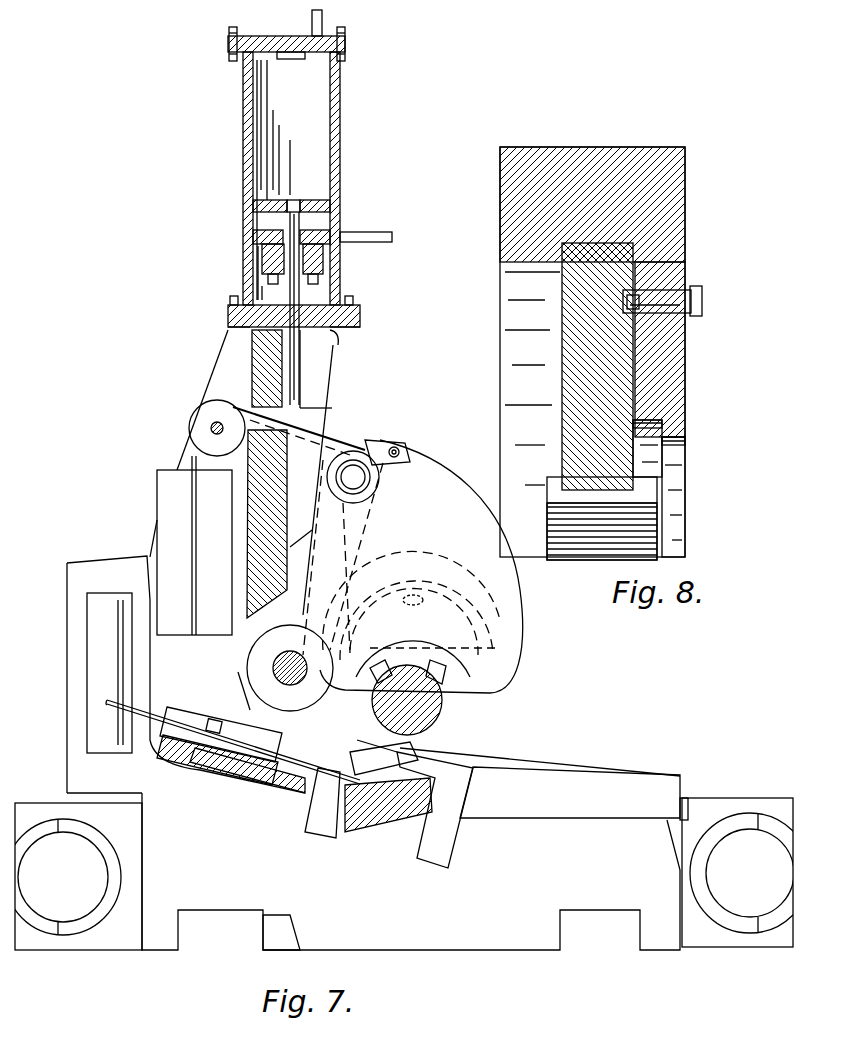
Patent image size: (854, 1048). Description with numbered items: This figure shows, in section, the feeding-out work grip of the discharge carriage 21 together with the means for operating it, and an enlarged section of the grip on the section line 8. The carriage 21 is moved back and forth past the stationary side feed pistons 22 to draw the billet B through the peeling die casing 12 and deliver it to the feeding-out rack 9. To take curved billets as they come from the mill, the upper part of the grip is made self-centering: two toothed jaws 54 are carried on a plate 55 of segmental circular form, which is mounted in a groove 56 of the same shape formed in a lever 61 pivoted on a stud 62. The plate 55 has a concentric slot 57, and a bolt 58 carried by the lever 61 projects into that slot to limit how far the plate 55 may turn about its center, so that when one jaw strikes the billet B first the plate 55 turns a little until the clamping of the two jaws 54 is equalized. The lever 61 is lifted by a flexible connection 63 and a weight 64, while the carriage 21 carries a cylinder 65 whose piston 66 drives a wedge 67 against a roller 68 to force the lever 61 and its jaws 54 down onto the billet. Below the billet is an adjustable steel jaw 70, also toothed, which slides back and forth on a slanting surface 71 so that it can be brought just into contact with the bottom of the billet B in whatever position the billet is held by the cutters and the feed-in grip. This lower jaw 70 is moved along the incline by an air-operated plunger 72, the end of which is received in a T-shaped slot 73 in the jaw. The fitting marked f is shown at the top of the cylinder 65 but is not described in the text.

In FIG. 7, the cylinder 65 is at (340, 155).
In FIG. 7, the piston 66 is at (318, 200).
In FIG. 7, the wedge 67 is at (320, 418).
In FIG. 7, the flexible connection 63 is at (356, 452).
In FIG. 7, the roller 68 is at (385, 445).
In FIG. 7, the lever 61 is at (460, 518).
In FIG. 8, the lever 61 is at (686, 190).
In FIG. 7, the stud 62 is at (293, 676).
In FIG. 7, the weight 64 is at (168, 500).
In FIG. 7, the bolt 58 is at (420, 597).
In FIG. 8, the bolt 58 is at (672, 312).
In FIG. 8, the concentric slot 57 is at (672, 275).
In FIG. 8, the groove 56 is at (605, 245).
In FIG. 7, the plate 55 is at (413, 646).
In FIG. 8, the plate 55 is at (590, 382).
In FIG. 7, the jaws 54 is at (378, 662).
In FIG. 8, the jaws 54 is at (588, 548).
In FIG. 7, the billet B is at (442, 718).
In FIG. 7, the section line 8— 8 is at (407, 703).
In FIG. 7, the feeding-out rack 9 is at (510, 760).
In FIG. 7, the peeling die casing 12 is at (106, 704).
In FIG. 7, the plunger 72 is at (214, 720).
In FIG. 7, the T-shaped slot 73 is at (362, 768).
In FIG. 7, the slanting surface 71 is at (355, 812).
In FIG. 7, the steel jaw 70 is at (395, 820).
In FIG. 7, the carriage 21 is at (226, 866).
In FIG. 7, the side feed pistons 22 is at (63, 896).
In FIG. 7, the fluid pipe f is at (324, 24).